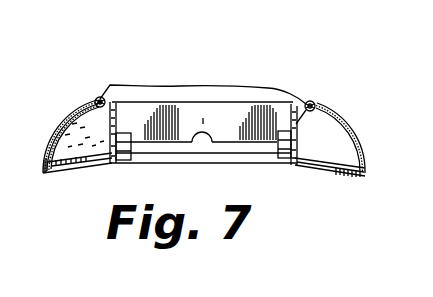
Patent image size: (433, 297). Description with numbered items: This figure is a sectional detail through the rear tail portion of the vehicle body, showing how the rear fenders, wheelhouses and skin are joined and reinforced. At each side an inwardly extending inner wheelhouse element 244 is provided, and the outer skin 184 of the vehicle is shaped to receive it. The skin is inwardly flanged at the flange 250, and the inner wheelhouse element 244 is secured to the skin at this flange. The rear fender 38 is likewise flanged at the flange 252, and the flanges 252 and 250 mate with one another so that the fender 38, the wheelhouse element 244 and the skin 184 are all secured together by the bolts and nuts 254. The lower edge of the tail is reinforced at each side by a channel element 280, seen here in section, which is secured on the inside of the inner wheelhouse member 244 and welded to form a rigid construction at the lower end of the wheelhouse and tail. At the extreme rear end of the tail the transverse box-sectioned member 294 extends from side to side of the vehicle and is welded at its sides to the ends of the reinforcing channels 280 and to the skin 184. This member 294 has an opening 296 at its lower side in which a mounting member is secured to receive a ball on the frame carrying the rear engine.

The rear fender 38 is at (88, 103).
The outer skin 184 is at (100, 97).
The inner wheelhouse element 244 is at (115, 112).
The flange 250 is at (100, 97).
The flange 252 is at (74, 122).
The bolts and nuts 254 is at (102, 100).
The channel element 280 is at (123, 160).
The transverse box-sectioned member 294 is at (203, 122).
The opening 296 is at (203, 142).